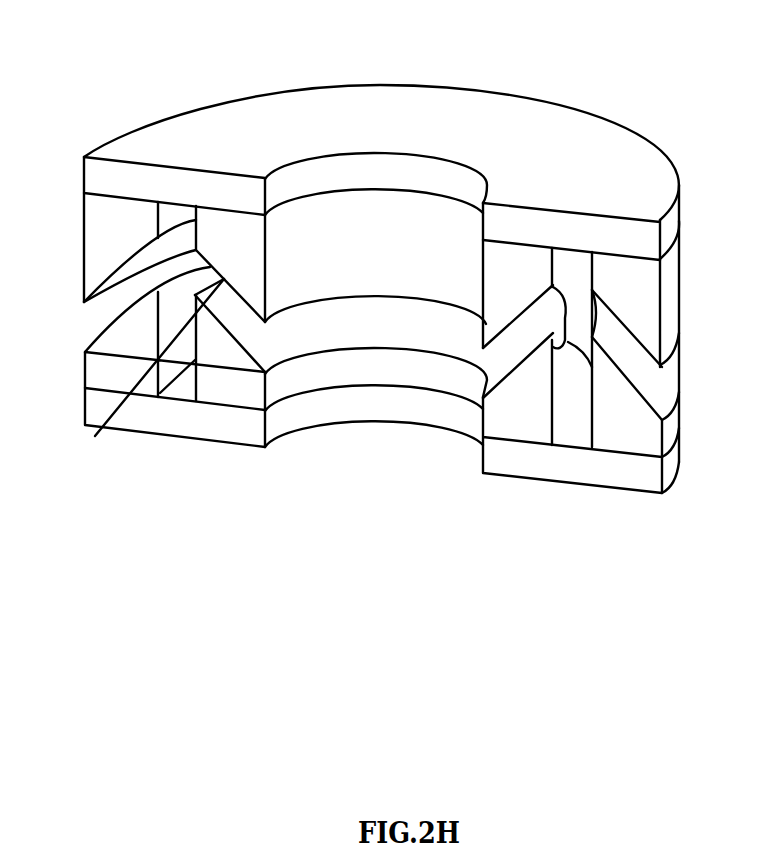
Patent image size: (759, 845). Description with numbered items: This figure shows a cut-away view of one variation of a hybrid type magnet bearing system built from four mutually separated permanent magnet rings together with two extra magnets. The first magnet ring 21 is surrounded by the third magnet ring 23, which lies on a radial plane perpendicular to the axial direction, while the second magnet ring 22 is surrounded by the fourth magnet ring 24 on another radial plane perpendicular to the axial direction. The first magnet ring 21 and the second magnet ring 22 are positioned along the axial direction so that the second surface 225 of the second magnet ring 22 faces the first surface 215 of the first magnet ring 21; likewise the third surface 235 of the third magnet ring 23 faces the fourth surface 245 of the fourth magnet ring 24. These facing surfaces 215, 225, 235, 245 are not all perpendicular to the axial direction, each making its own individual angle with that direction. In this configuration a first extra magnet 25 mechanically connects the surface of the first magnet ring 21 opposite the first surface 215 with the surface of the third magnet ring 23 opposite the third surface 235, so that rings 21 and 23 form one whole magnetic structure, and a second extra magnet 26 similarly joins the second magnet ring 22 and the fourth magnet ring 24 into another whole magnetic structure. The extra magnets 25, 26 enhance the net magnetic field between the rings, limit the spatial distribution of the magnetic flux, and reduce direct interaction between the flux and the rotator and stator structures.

The first magnet ring 21 is at (237, 237).
The second magnet ring 22 is at (232, 383).
The third magnet ring 23 is at (122, 228).
The fourth magnet ring 24 is at (123, 355).
The first extra magnet 25 is at (433, 123).
The second extra magnet 26 is at (535, 465).
The first surface 215 is at (95, 436).
The second surface 225 is at (375, 322).
The third surface 235 is at (122, 266).
The fourth surface 245 is at (647, 392).